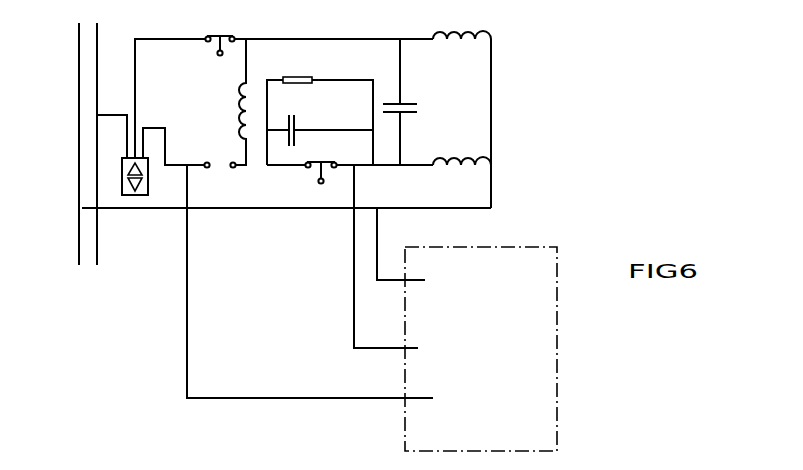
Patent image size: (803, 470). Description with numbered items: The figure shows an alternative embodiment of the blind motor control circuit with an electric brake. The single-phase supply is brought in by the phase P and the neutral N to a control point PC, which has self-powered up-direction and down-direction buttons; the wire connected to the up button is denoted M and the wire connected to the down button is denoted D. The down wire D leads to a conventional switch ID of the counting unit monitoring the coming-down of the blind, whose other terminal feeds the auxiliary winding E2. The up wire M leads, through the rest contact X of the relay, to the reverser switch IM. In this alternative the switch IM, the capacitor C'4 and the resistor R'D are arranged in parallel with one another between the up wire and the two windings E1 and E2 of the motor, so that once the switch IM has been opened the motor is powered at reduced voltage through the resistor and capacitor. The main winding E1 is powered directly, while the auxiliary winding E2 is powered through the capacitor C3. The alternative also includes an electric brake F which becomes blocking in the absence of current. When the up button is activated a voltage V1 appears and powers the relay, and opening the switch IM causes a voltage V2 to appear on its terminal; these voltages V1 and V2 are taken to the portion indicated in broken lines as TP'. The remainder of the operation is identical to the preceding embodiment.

The neutral N is at (73, 160).
The phase P is at (112, 160).
The control point PC is at (122, 182).
The down-direction wire D is at (170, 98).
The switch ID is at (319, 32).
The up-direction wire M is at (174, 146).
The rest contact X is at (234, 177).
The electric brake F is at (233, 102).
The resistor R'D is at (320, 107).
The capacitor C'4 is at (320, 122).
The reverser switch IM is at (350, 161).
The capacitor C3 is at (415, 102).
The auxiliary winding E2 is at (462, 107).
The main winding E1 is at (462, 150).
The voltage V1 is at (398, 259).
The voltage V2 is at (386, 272).
The test module TP' is at (500, 320).